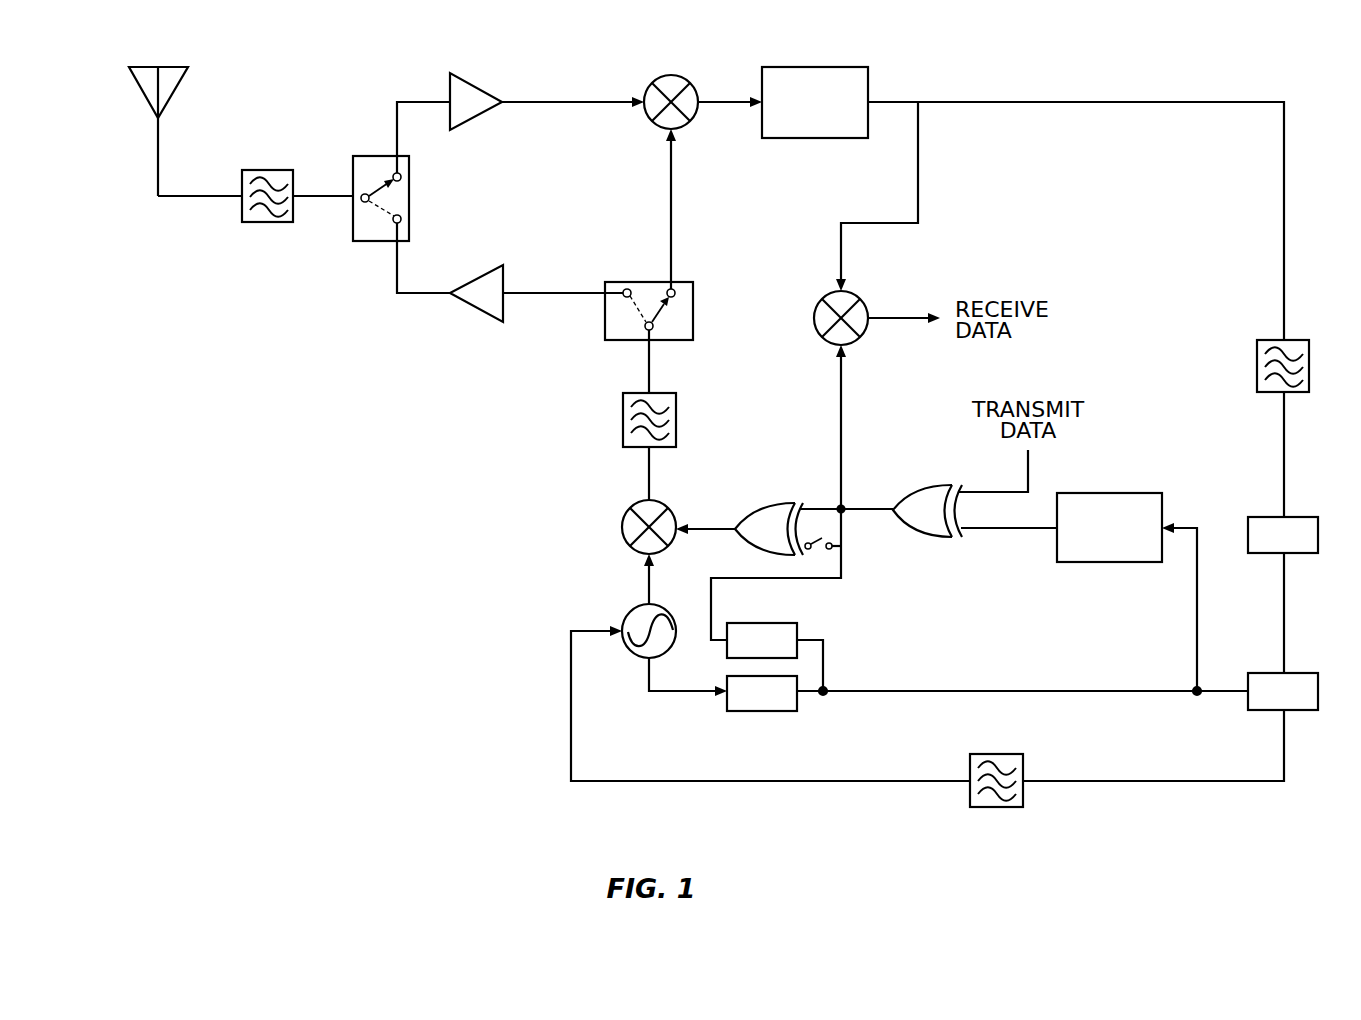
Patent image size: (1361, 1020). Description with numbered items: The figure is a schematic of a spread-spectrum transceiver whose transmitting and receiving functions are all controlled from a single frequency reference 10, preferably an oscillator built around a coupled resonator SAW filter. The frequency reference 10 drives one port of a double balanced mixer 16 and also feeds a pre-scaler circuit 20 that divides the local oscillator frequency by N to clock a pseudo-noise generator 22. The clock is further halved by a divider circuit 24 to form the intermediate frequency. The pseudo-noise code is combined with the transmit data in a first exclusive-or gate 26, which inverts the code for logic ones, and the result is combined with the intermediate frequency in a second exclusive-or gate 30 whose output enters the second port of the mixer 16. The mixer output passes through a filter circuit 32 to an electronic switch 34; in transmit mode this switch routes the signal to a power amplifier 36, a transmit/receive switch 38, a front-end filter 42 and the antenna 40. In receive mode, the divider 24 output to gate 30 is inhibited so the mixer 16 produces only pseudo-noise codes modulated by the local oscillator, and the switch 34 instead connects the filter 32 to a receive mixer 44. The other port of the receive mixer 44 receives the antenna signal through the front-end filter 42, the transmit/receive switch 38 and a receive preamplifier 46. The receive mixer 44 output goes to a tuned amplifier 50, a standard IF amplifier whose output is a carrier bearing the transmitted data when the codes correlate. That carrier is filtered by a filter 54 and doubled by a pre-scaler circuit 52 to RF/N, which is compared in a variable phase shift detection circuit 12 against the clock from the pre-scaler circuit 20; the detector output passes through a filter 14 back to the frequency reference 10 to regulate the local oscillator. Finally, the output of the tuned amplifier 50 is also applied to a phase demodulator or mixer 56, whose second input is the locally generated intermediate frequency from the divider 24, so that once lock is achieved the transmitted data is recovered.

The frequency reference 10 is at (633, 610).
The variable phase shift detection circuit 12 is at (1292, 673).
The filter 14 is at (988, 808).
The double balanced mixer 16 is at (664, 507).
The pre-scaler circuit 20 is at (745, 711).
The pseudo-noise generator 22 is at (1115, 493).
The divider circuit 24 is at (786, 623).
The first exclusive-or gate 26 is at (920, 537).
The second exclusive-or gate 30 is at (766, 503).
The filter circuit 32 is at (677, 401).
The electronic switch 34 is at (693, 303).
The power amplifier 36 is at (486, 268).
The transmit/receive switch 38 is at (409, 181).
The antenna 40 is at (178, 84).
The front-end filter 42 is at (276, 170).
The receive mixer 44 is at (685, 80).
The receive preamplifier 46 is at (474, 86).
The tuned amplifier 50 is at (829, 67).
The pre-scaler circuit 52 is at (1292, 517).
The filter 54 is at (1290, 340).
The phase demodulator or mixer 56 is at (855, 297).